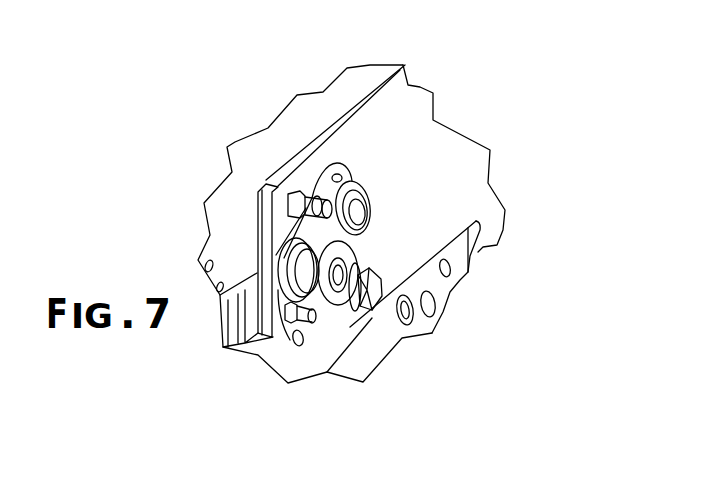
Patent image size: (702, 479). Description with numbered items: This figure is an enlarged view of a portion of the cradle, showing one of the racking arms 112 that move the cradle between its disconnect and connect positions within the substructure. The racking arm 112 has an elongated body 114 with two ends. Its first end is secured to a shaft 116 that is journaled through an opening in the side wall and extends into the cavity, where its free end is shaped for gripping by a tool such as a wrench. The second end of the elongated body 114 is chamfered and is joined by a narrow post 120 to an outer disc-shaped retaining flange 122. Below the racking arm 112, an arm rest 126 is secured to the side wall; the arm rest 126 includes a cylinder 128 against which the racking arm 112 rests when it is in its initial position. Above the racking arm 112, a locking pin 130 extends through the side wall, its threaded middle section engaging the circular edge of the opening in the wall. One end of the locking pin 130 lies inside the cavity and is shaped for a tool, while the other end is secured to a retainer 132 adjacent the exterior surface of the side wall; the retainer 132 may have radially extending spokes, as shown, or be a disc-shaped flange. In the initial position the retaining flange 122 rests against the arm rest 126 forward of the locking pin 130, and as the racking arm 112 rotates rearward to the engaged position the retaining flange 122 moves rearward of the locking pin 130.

The racking arm 112 is at (364, 170).
The elongated body 114 is at (333, 232).
The shaft 116 is at (357, 210).
The narrow post 120 is at (287, 305).
The retaining flange 122 is at (331, 303).
The arm rest 126 is at (366, 322).
The cylinder 128 is at (363, 382).
The locking pin 130 is at (296, 194).
The retainer 132 is at (340, 175).